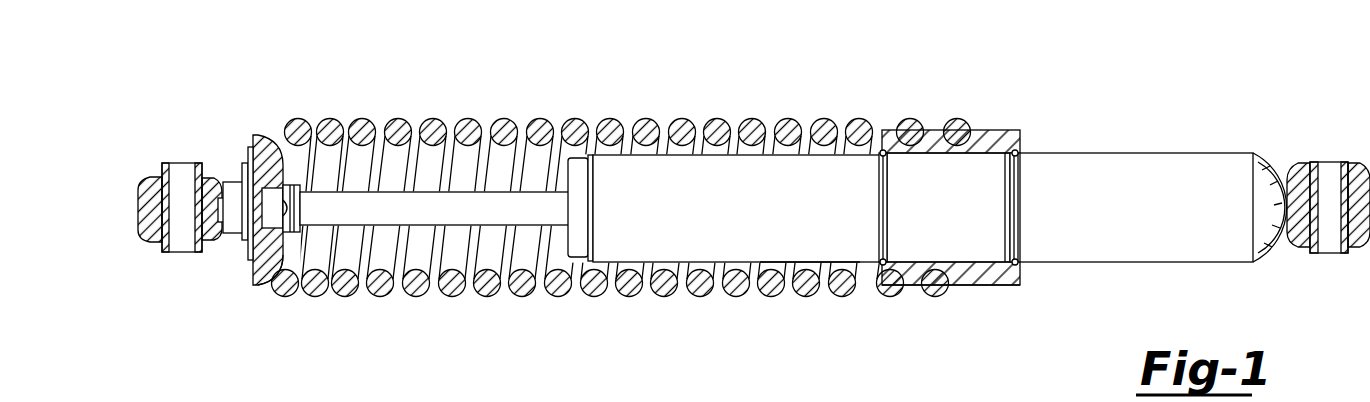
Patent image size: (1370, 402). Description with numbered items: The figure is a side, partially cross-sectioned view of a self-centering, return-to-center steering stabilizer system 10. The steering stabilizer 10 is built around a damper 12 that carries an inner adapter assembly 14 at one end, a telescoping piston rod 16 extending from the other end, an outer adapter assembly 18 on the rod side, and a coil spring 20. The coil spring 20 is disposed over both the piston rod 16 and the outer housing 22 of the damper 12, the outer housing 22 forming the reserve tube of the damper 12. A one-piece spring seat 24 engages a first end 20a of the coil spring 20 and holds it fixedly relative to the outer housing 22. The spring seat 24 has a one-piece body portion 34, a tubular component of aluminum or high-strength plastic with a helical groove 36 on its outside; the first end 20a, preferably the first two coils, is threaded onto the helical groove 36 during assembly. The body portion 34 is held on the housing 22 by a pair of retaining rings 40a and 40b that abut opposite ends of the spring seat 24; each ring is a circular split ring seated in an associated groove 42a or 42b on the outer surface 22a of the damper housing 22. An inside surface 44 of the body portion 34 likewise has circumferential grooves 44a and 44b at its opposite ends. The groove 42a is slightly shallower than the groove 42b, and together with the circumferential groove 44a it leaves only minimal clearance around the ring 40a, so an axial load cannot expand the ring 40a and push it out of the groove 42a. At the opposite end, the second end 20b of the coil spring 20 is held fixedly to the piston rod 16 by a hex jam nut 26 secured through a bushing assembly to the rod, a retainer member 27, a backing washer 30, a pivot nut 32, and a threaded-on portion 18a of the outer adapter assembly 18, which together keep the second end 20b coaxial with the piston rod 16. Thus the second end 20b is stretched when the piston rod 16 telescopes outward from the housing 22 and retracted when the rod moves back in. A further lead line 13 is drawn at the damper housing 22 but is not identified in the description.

The steering stabilizer system 10 is at (748, 209).
The damper 12 is at (1060, 148).
The outer surface of cylinder 13 is at (816, 266).
The inner adapter assembly 14 is at (1295, 147).
The telescoping piston rod 16 is at (457, 207).
The outer adapter assembly 18 is at (182, 157).
The threaded-on portion of the outer adapter assembly 18a is at (235, 182).
The coil spring 20 is at (606, 171).
The first end of the coil spring 20a is at (915, 124).
The second end of the coil spring 20b is at (298, 128).
The outer housing 22 is at (718, 240).
The outer surface of the damper housing 22a is at (1008, 248).
The spring seat 24 is at (1002, 288).
The hex jam nut 26 is at (298, 233).
The retainer member 27 is at (281, 268).
The backing washer 30 is at (247, 265).
The pivot nut 32 is at (290, 195).
The one-piece body portion 34 is at (968, 270).
The helical groove 36 is at (933, 292).
The retaining ring 40a is at (883, 150).
The retaining ring 40b is at (1018, 264).
The groove 42a is at (880, 186).
The groove 42b is at (1019, 208).
The inside surface of the one-piece body portion 44 is at (970, 261).
The circumferential groove 44a is at (880, 260).
The circumferential groove 44b is at (1012, 154).